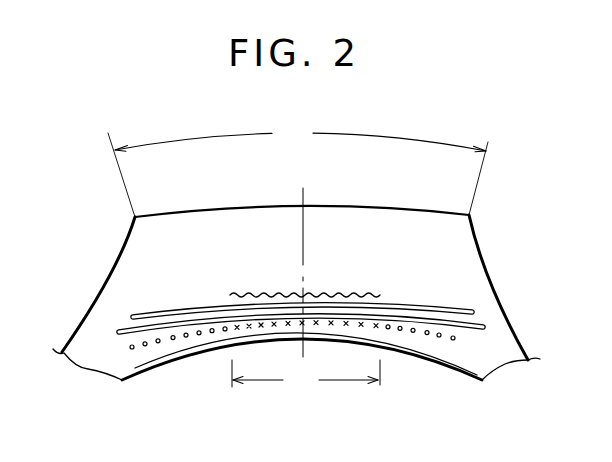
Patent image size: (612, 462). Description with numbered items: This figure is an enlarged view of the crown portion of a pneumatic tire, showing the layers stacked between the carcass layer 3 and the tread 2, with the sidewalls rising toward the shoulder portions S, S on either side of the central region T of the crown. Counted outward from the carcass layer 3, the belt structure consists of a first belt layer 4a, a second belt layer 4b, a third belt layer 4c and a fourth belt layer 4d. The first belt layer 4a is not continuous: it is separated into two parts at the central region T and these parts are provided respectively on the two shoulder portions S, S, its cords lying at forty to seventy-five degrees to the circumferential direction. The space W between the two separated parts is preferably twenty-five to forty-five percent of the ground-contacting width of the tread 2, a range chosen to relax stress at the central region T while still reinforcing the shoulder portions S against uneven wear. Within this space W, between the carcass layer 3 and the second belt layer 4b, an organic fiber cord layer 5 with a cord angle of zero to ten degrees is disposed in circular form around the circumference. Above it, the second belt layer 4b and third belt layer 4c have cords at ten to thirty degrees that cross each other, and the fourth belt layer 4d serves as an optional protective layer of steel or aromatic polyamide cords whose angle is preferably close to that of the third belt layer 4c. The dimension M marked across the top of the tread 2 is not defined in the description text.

The tread 2 is at (195, 218).
The carcass layer 3 is at (143, 365).
The first belt layer 4a is at (160, 342).
The second belt layer 4b is at (478, 325).
The third belt layer 4c is at (145, 312).
The fourth belt layer 4d is at (368, 293).
The organic fiber cord layer 5 is at (344, 328).
The shoulder portion S is at (118, 257).
The central region of the crown T is at (328, 203).
The tread width M is at (298, 168).
The space between the two parts of the first belt layer W is at (306, 377).